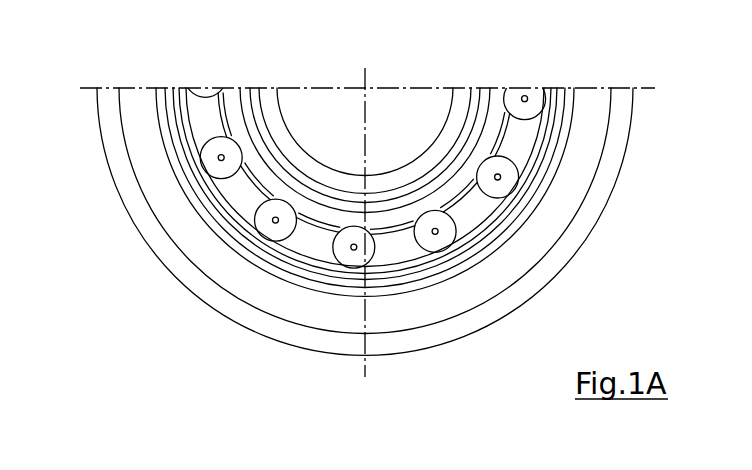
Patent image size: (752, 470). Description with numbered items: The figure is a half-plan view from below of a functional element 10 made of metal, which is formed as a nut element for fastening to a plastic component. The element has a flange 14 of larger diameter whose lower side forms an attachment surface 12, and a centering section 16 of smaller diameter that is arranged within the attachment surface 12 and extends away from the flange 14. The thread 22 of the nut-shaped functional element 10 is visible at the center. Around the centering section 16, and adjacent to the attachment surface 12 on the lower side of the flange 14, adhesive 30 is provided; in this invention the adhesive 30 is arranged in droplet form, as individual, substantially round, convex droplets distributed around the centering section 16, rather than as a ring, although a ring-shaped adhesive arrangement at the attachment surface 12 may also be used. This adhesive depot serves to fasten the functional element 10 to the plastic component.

The functional element 10 is at (127, 328).
The attachment surface 12 is at (523, 146).
The flange 14 is at (549, 229).
The centering section 16 is at (232, 103).
The thread 22 is at (457, 103).
The adhesive 30 is at (219, 158).